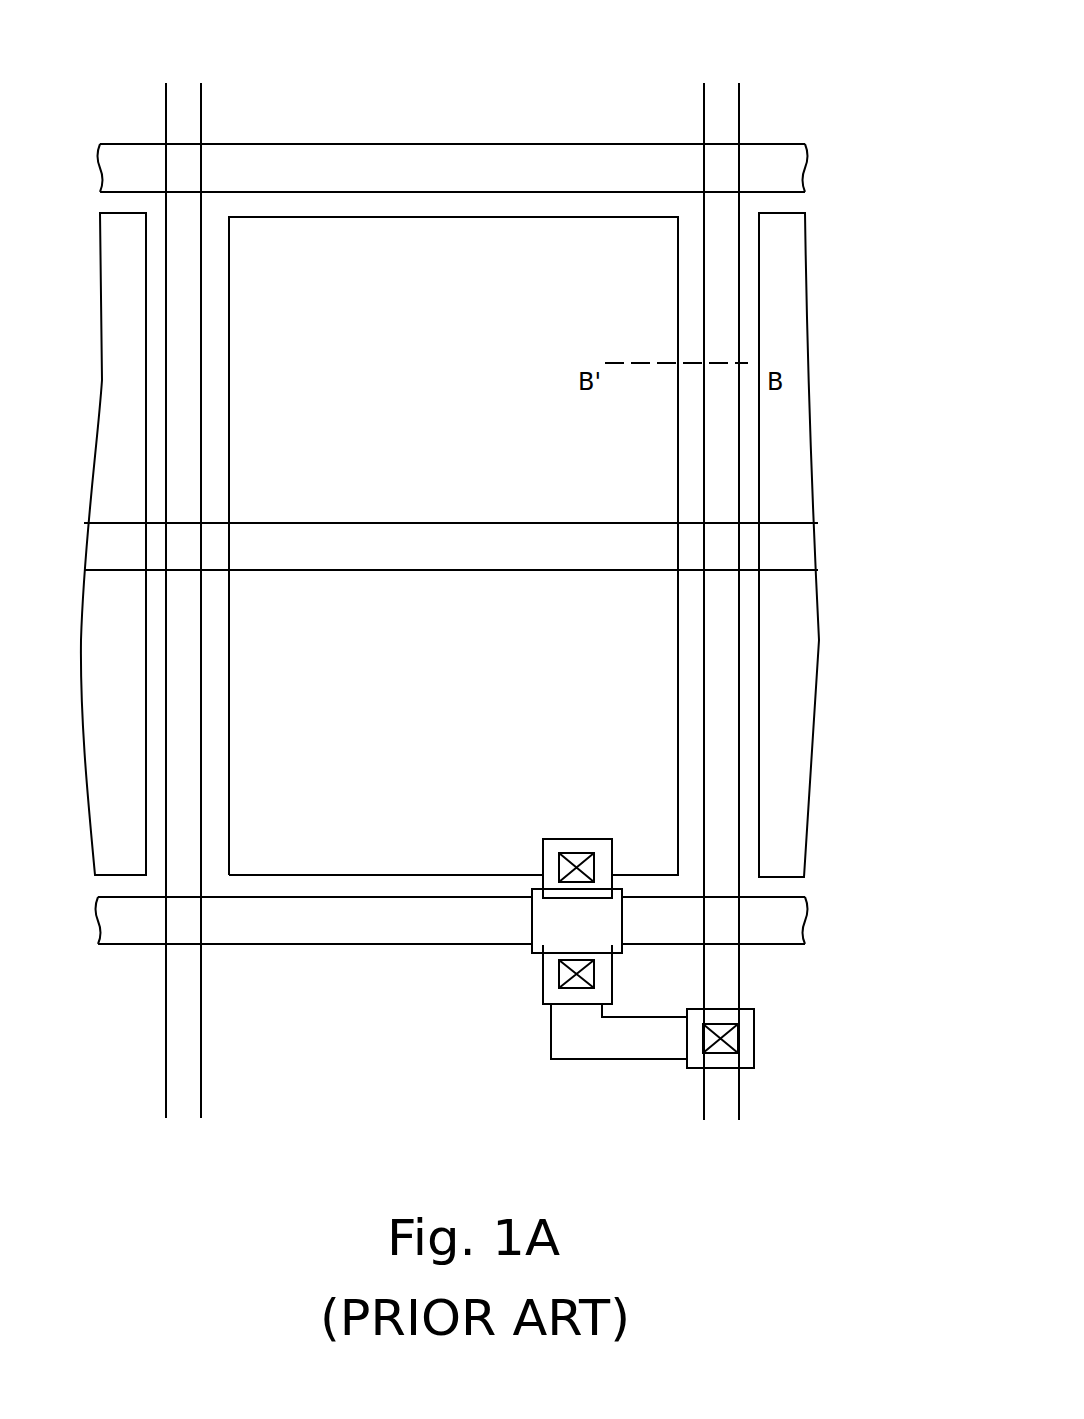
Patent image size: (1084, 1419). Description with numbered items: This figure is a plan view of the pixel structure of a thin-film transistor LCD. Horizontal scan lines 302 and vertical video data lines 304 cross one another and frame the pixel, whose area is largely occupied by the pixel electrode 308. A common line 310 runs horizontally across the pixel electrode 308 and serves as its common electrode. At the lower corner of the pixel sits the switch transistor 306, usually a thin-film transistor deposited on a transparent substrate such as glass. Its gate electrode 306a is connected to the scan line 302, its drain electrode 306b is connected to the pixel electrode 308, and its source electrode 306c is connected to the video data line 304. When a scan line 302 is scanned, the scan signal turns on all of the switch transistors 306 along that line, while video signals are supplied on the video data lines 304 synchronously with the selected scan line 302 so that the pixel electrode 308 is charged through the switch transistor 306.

The scan line 302 is at (793, 183).
The video data line 304 is at (180, 90).
The switch transistor 306 is at (755, 1040).
The gate electrode 306a is at (542, 916).
The drain electrode 306b is at (543, 865).
The source electrode 306c is at (543, 974).
The pixel electrode 308 is at (650, 303).
The common line 310 is at (793, 550).